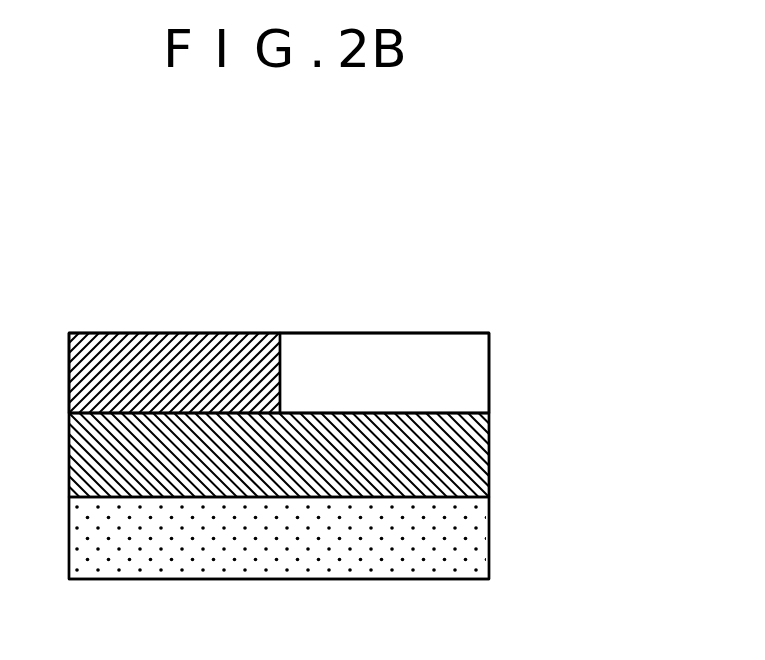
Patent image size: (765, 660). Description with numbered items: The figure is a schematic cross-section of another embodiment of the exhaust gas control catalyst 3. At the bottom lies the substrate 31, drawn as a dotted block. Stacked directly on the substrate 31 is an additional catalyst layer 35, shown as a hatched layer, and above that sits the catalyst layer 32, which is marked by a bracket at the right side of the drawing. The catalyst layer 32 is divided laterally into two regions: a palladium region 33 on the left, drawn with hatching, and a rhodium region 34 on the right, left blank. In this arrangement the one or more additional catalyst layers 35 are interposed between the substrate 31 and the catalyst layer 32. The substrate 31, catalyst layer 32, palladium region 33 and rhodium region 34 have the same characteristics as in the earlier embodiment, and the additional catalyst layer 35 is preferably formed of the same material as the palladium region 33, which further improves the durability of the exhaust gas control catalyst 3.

The exhaust gas control catalyst 3 is at (497, 250).
The substrate 31 is at (489, 533).
The catalyst layer 32 is at (497, 332).
The palladium region 33 is at (180, 332).
The rhodium region 34 is at (383, 332).
The additional catalyst layer 35 is at (489, 450).